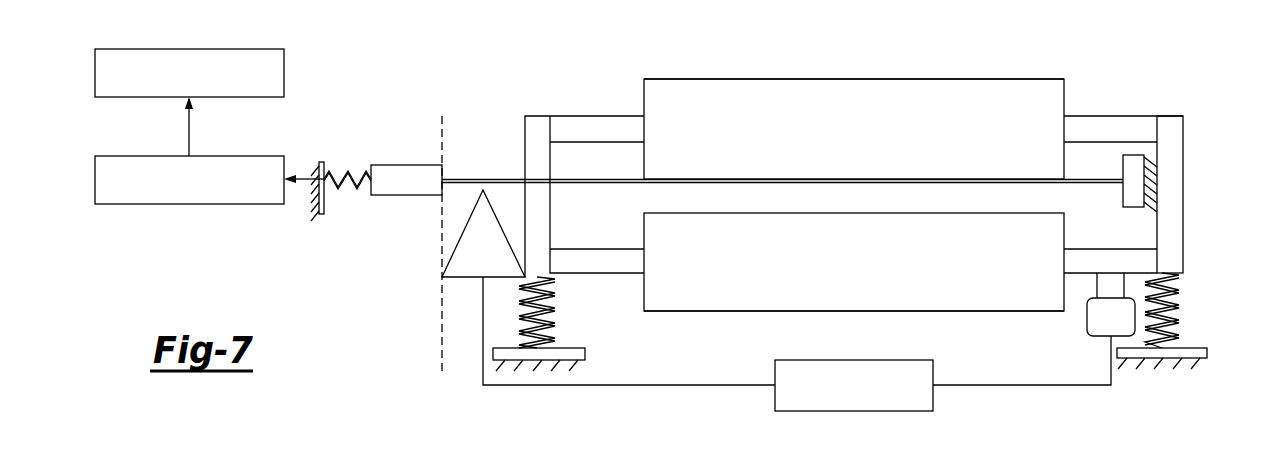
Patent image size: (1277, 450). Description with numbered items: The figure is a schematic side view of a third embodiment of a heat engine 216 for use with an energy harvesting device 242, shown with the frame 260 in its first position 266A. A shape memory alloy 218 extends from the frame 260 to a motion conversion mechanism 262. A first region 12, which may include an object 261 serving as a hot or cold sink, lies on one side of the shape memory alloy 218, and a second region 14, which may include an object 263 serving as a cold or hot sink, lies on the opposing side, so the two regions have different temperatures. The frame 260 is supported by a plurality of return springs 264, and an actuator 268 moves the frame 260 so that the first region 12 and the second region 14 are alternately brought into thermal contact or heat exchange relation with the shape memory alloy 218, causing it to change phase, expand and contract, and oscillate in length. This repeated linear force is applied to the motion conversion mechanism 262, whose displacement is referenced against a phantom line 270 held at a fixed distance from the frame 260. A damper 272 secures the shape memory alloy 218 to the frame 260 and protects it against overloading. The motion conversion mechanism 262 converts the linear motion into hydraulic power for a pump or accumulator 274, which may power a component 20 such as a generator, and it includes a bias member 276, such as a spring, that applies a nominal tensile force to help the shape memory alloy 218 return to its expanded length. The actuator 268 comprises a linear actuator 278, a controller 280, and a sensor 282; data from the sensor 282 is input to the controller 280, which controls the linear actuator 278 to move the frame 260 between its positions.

The first region 12 is at (863, 141).
The second region 14 is at (863, 273).
The component 20 is at (197, 83).
The heat engine 216 is at (409, 94).
The shape memory alloy 218 is at (485, 178).
The energy harvesting device 242 is at (93, 126).
The frame 260 is at (1172, 240).
The object 261 is at (692, 79).
The motion conversion mechanism 262 is at (403, 196).
The object 263 is at (690, 312).
The return springs 264 is at (1170, 322).
The first position 266A is at (601, 91).
The actuator 268 is at (519, 401).
The phantom line 270 is at (442, 130).
The damper 272 is at (1150, 188).
The pump or accumulator 274 is at (198, 191).
The bias member 276 is at (338, 196).
The linear actuator 278 is at (1087, 318).
The controller 280 is at (903, 412).
The sensor 282 is at (462, 280).